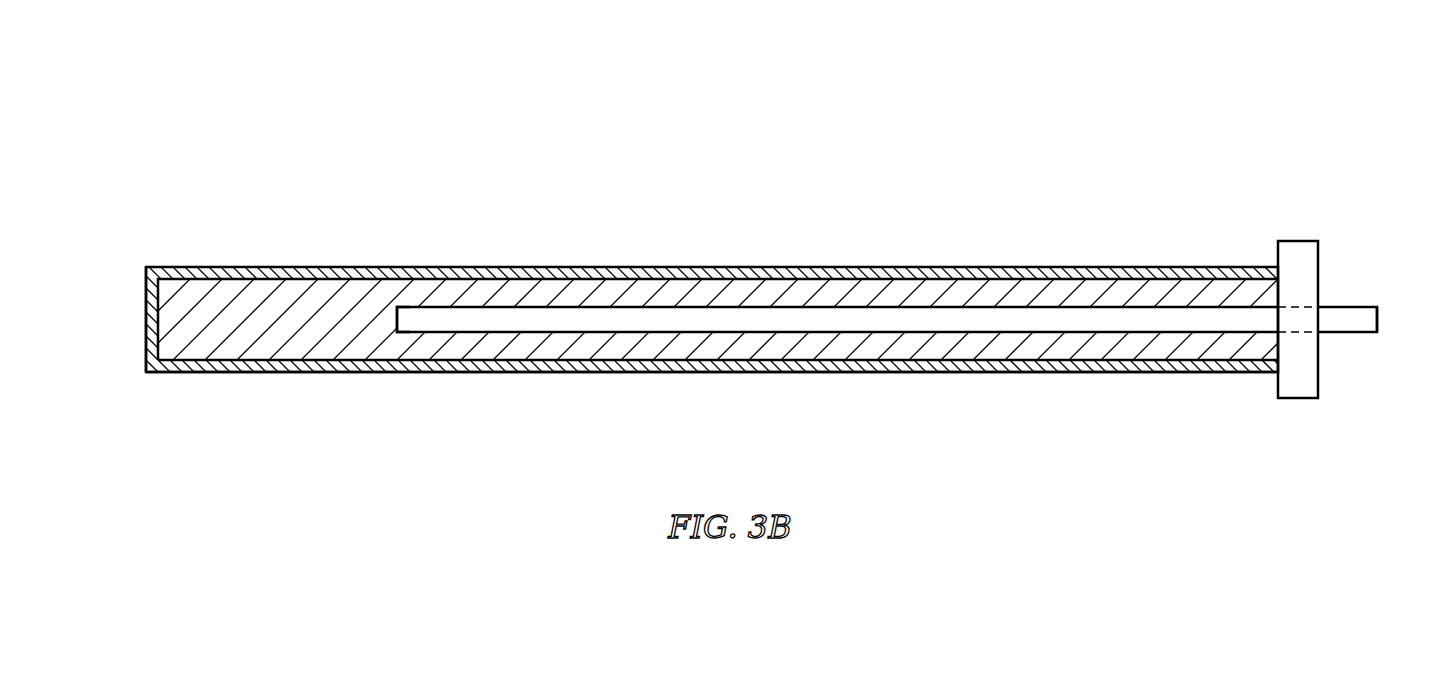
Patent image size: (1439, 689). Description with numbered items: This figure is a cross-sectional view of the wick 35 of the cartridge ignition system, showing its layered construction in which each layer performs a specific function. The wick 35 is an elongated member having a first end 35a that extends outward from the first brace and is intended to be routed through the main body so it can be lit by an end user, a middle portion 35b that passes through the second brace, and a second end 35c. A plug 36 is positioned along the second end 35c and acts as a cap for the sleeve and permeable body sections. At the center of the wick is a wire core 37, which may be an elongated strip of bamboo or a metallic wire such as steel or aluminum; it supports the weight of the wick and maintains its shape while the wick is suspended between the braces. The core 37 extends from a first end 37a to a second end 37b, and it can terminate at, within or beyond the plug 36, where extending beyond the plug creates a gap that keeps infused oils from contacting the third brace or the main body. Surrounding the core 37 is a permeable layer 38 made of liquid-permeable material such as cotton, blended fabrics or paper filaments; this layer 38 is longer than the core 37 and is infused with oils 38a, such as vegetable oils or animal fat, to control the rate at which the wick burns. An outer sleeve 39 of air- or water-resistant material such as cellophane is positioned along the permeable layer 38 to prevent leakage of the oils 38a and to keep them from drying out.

The wick 35 is at (228, 137).
The first end 35a is at (145, 300).
The middle portion 35b is at (673, 374).
The second end 35c is at (1377, 320).
The plug 36 is at (1298, 392).
The wire core 37 is at (904, 326).
The first end of the core 37a is at (398, 321).
The second end of the core 37b is at (1348, 314).
The permeable layer 38 is at (457, 270).
The oils 38a is at (308, 289).
The outer sleeve 39 is at (215, 268).